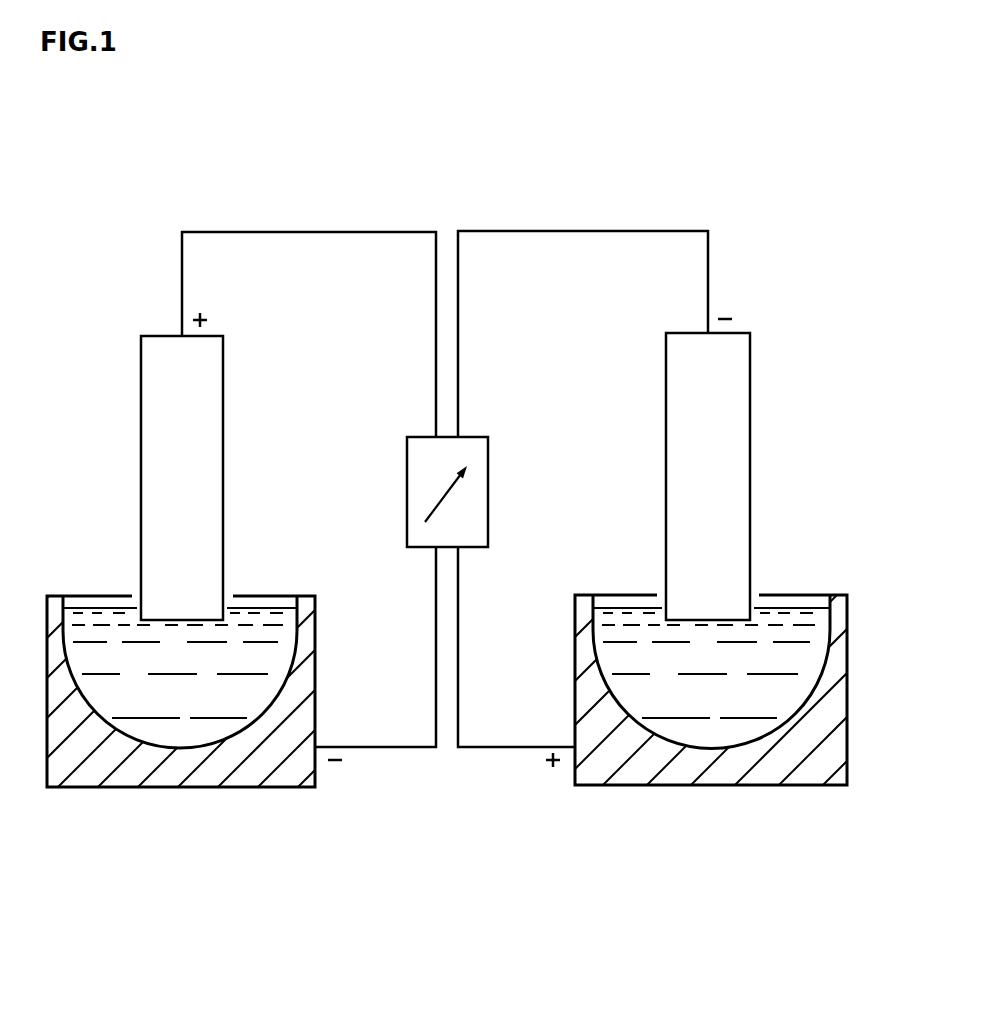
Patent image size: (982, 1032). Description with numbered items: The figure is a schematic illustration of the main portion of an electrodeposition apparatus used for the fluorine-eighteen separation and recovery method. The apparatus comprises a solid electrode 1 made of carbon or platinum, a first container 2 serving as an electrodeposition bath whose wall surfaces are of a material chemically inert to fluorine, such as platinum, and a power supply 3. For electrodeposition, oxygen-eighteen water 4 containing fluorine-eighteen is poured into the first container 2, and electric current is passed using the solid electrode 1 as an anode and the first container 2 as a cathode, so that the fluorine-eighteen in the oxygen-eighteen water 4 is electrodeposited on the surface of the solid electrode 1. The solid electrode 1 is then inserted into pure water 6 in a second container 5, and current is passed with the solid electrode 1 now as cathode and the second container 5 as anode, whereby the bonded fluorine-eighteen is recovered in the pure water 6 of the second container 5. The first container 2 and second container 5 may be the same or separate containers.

The solid electrode 1 is at (153, 372).
The first container 2 is at (248, 767).
The power supply 3 is at (415, 458).
The 18O water 4 is at (101, 633).
The second container 5 is at (780, 760).
The pure water 6 is at (785, 633).